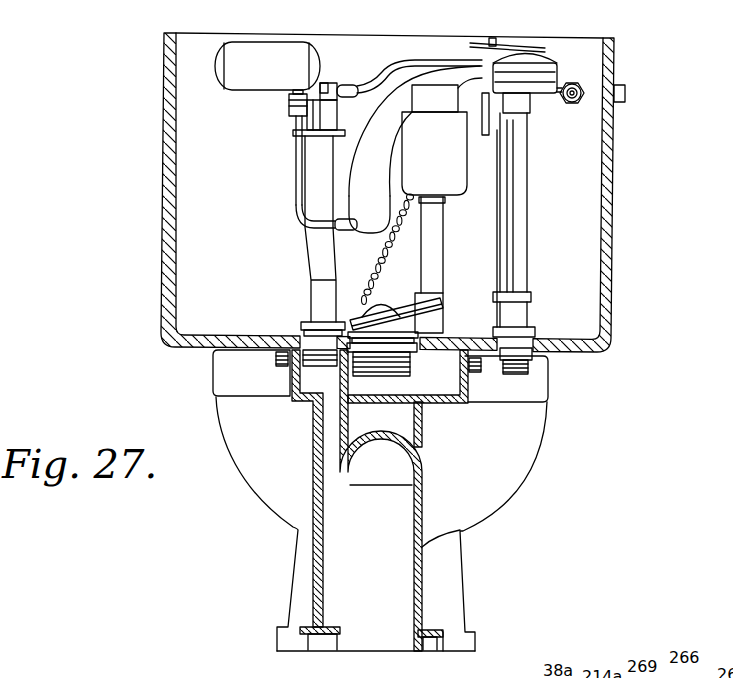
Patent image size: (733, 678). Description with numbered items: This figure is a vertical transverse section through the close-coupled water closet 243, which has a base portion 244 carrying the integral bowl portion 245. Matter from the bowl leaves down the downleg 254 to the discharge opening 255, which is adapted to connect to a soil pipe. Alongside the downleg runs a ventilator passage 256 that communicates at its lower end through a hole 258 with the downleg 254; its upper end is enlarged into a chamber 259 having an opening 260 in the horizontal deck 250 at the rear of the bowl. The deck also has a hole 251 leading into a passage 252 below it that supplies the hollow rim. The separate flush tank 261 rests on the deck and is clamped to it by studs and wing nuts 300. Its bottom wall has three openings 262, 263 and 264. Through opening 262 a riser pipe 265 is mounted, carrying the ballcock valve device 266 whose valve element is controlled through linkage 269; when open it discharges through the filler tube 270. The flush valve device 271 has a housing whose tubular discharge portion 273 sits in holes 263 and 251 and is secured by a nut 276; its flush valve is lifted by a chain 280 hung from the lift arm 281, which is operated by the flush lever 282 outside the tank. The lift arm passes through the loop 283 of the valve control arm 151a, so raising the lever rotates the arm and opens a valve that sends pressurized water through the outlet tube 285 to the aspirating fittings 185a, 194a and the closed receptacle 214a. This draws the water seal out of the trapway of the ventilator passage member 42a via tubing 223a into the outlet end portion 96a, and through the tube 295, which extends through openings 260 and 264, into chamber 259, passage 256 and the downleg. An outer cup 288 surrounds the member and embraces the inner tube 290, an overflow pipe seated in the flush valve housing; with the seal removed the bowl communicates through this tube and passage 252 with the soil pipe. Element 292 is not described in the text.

The closed receptacle 214a is at (275, 47).
The hose 292 is at (453, 78).
The linkage 269 is at (482, 46).
The ballcock valve device 266 is at (551, 56).
The outlet tube 285 is at (366, 100).
The auxiliary fitting 194a is at (286, 108).
The main fitting 185a is at (352, 104).
The loop 283 is at (473, 122).
The valve control arm 151a is at (490, 112).
The flush lever 282 is at (630, 93).
The lift arm 281 is at (549, 107).
The flush tank 261 is at (163, 178).
The tubing 223a is at (295, 165).
The ventilator passage member 42a is at (350, 185).
The outlet end portion 96a is at (313, 202).
The tube 295 is at (312, 248).
The riser pipe 265 is at (524, 200).
The outer cup 288 is at (465, 172).
The inner tube 290 is at (445, 237).
The filler tube 270 is at (503, 240).
The chain 280 is at (433, 250).
The flush valve device 271 is at (387, 299).
The opening 264 is at (297, 330).
The deck 250 is at (444, 355).
The opening 262 is at (537, 345).
The studs and wing nuts 300 is at (273, 362).
The hole 251 is at (408, 362).
The opening 260 is at (300, 364).
The chamber 259 is at (310, 383).
The opening 263 is at (371, 364).
The tubular discharge portion 273 is at (413, 397).
The nut 276 is at (408, 446).
The passage 252 is at (453, 405).
The close-coupled water closet 243 is at (562, 372).
The bowl portion 245 is at (520, 480).
The ventilator passage 256 is at (328, 492).
The downleg 254 is at (420, 562).
The hole 258 is at (343, 608).
The base portion 244 is at (470, 635).
The discharge opening 255 is at (408, 643).